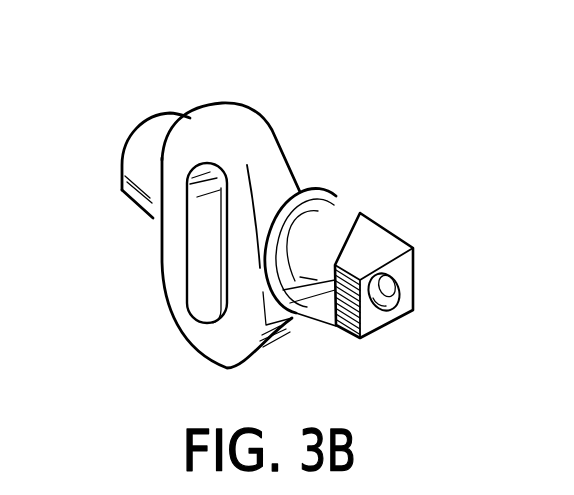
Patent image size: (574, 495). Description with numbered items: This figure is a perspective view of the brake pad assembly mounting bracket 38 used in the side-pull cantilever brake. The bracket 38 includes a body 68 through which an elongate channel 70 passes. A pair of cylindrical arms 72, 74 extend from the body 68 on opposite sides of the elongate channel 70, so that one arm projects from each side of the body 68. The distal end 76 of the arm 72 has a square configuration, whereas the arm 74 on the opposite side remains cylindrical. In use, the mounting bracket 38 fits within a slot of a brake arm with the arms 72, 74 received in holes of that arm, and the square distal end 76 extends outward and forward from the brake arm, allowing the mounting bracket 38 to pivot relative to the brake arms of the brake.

The brake pad assembly mounting bracket 38 is at (297, 132).
The cylindrical arm 74 is at (148, 140).
The elongate channel 70 is at (193, 262).
The cylindrical arm 72 is at (353, 230).
The square distal end 76 is at (407, 267).
The body 68 is at (277, 340).